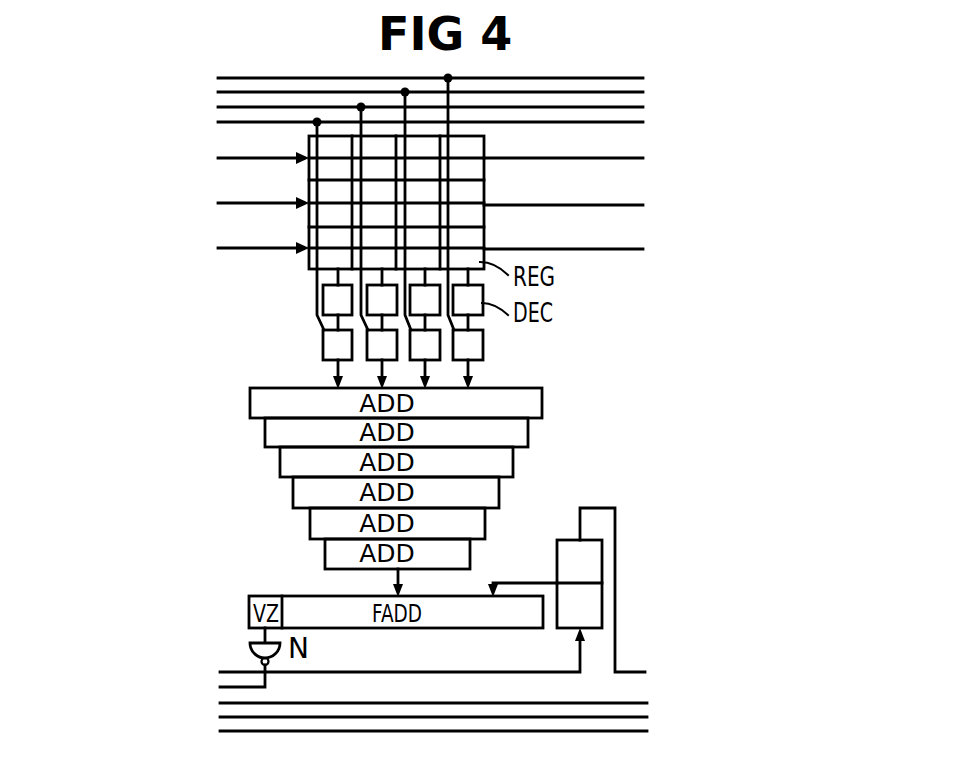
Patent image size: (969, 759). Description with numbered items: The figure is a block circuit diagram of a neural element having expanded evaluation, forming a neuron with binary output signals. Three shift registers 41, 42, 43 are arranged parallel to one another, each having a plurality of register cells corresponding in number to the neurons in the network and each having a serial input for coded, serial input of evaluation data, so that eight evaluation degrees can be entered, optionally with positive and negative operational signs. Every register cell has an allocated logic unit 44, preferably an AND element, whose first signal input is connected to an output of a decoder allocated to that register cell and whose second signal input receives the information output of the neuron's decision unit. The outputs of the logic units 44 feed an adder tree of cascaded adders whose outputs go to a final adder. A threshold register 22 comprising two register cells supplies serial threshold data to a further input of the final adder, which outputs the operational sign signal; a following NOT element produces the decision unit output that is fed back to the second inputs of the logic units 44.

The shift register 41 is at (484, 146).
The shift register 42 is at (478, 197).
The shift register 43 is at (480, 240).
The logic unit 44 is at (484, 352).
The threshold register 22 is at (602, 583).